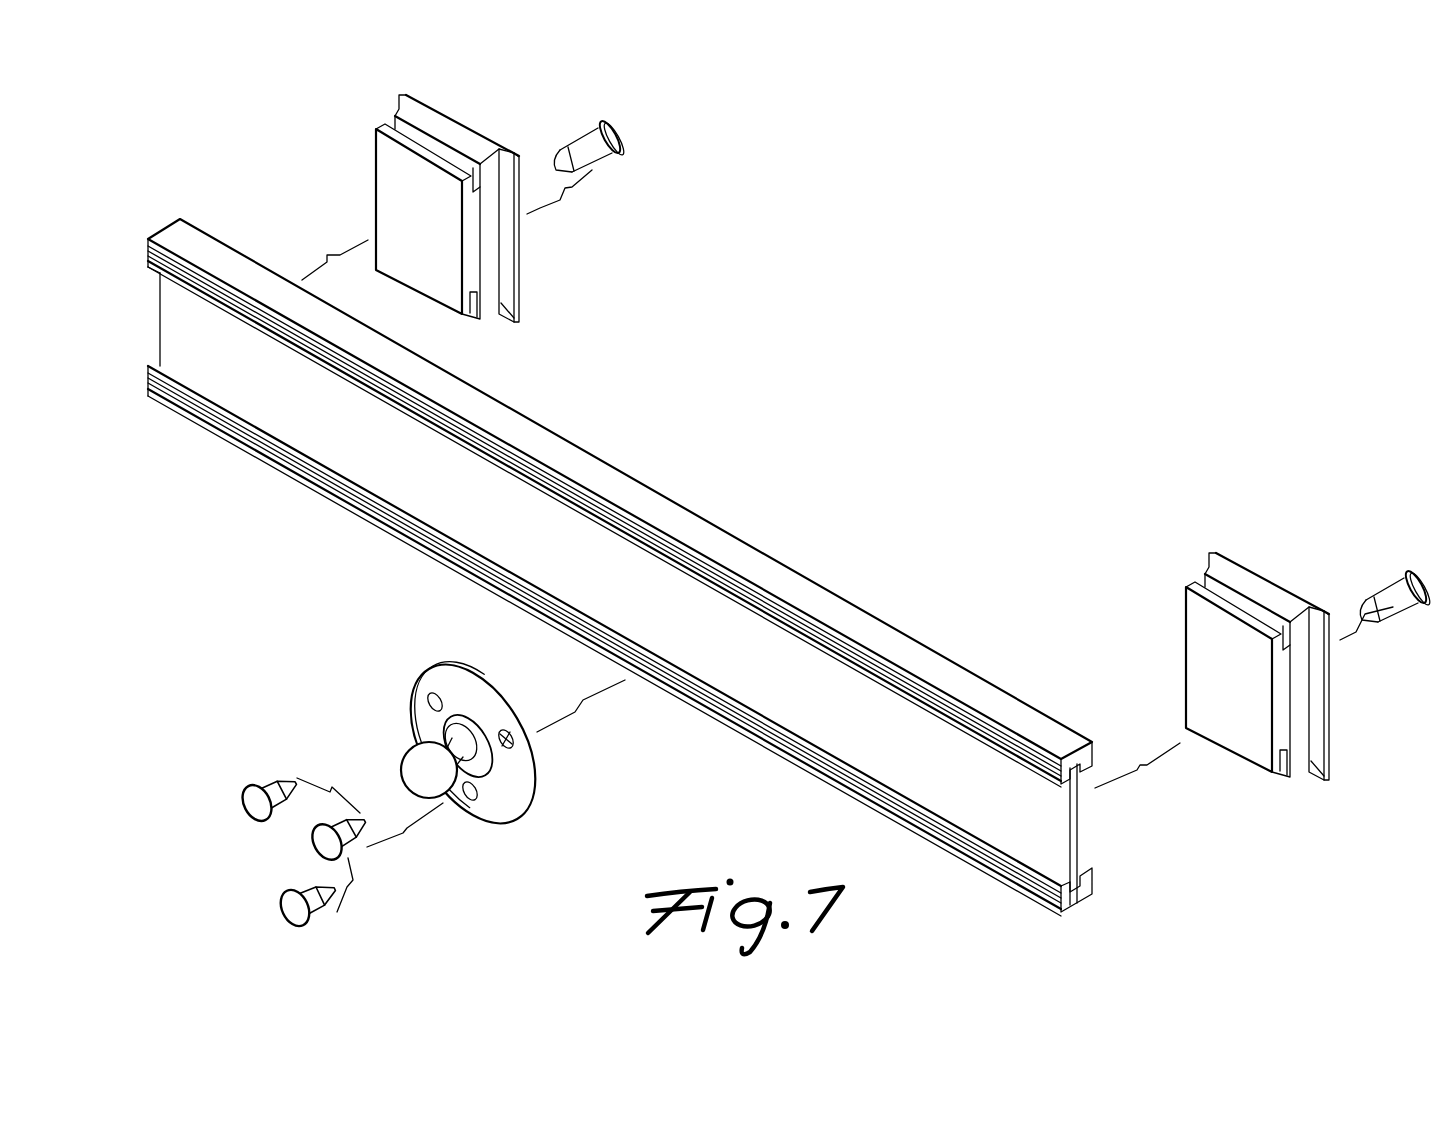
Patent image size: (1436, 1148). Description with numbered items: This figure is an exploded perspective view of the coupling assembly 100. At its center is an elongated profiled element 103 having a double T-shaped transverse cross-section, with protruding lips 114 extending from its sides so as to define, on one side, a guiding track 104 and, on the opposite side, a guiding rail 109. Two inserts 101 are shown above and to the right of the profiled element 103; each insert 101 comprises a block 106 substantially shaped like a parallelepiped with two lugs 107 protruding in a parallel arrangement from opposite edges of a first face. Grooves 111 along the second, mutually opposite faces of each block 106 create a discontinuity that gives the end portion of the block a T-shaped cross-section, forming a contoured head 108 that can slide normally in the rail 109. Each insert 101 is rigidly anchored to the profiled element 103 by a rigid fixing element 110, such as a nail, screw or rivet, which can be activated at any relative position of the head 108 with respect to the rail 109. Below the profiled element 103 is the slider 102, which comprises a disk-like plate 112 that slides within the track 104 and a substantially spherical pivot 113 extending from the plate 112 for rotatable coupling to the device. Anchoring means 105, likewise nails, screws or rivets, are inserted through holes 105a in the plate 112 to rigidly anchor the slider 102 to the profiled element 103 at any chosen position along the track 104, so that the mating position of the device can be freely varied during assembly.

The assembly 100 is at (896, 342).
The insert 101 is at (478, 122).
The slider 102 is at (393, 708).
The profiled element 103 is at (735, 520).
The guiding track 104 is at (840, 742).
The means for rigid anchoring 105 is at (246, 798).
The holes 105a is at (425, 695).
The block 106 is at (482, 150).
The lugs 107 is at (399, 95).
The contoured head 108 is at (404, 236).
The guiding rail 109 is at (1093, 807).
The rigid fixing elements 110 is at (625, 136).
The grooves 111 is at (395, 128).
The plate 112 is at (500, 795).
The pivot 113 is at (413, 770).
The protruding lips 114 is at (906, 686).